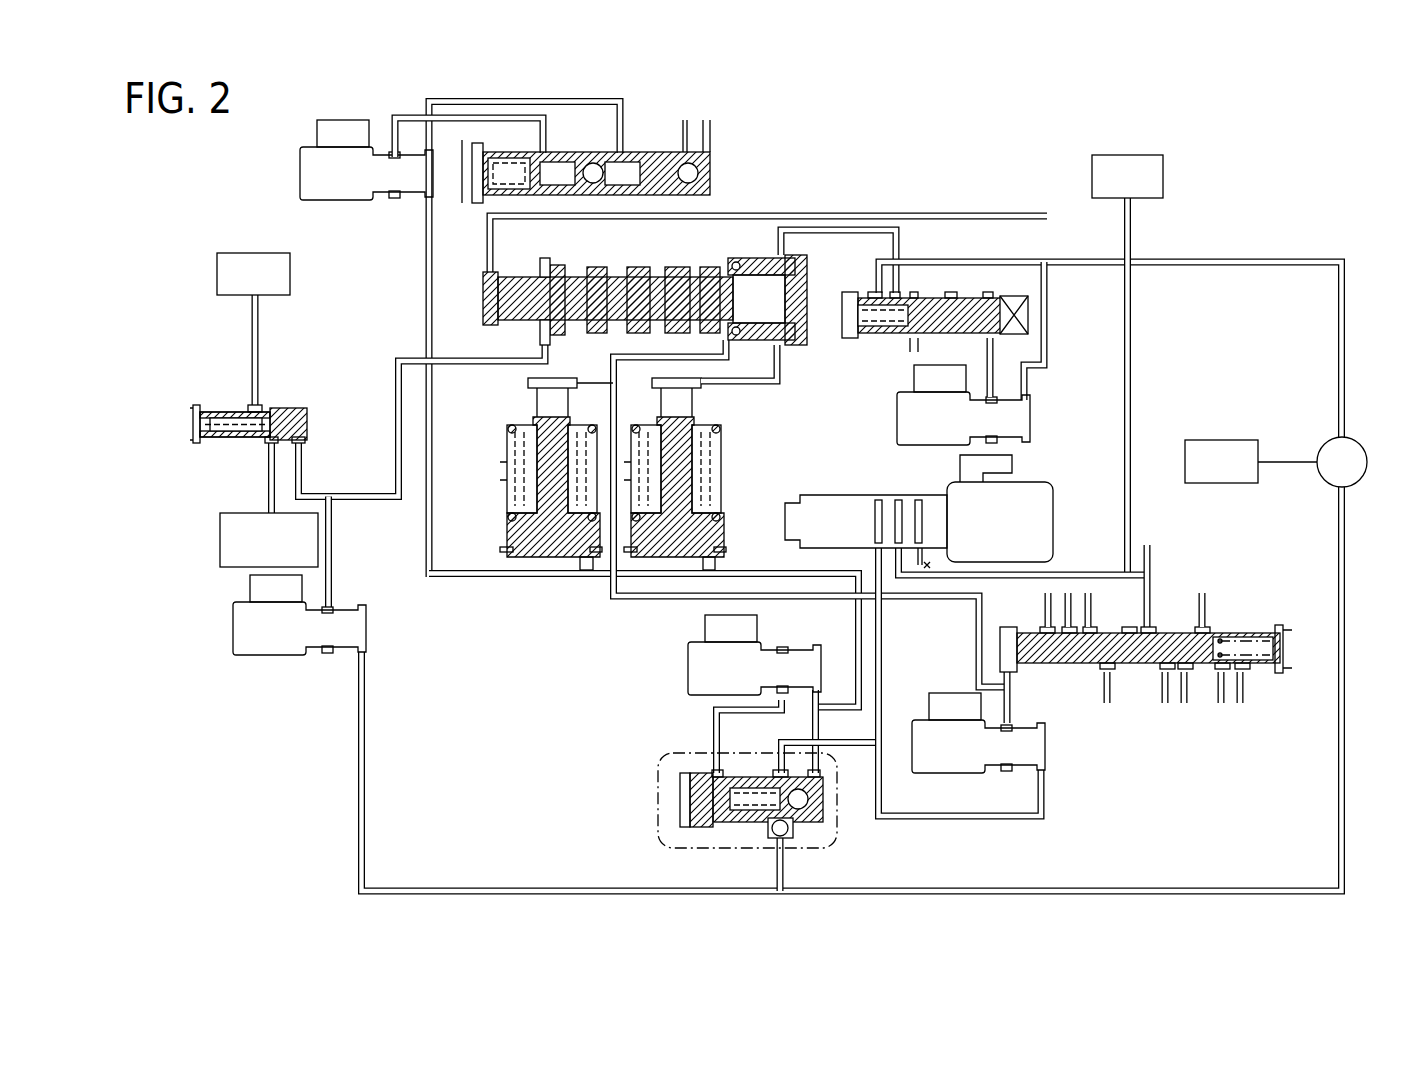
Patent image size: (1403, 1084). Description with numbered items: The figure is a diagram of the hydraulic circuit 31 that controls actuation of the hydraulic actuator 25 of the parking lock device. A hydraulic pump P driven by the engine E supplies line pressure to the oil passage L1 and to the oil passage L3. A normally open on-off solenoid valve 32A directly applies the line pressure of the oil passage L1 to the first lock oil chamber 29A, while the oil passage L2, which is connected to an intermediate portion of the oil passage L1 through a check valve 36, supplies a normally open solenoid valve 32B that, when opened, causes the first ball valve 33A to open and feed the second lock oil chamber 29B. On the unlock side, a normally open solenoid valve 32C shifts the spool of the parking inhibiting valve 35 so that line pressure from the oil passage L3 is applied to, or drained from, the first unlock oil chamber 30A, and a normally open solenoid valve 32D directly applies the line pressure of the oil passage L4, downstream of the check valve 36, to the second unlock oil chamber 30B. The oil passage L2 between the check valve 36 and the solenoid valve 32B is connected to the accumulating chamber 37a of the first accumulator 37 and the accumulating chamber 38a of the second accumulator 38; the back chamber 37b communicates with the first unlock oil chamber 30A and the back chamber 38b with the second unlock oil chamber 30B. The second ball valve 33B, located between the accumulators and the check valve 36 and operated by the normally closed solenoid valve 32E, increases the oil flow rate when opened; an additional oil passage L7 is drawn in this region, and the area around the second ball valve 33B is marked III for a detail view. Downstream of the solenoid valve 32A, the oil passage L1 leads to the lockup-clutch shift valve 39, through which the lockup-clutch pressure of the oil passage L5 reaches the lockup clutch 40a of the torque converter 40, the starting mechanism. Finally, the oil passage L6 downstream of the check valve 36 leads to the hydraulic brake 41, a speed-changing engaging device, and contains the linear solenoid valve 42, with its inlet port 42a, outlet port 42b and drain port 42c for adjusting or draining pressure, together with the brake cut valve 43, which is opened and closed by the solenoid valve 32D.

The hydraulic actuator 25 is at (623, 283).
The first lock oil chamber 29A is at (540, 340).
The second lock oil chamber 29B is at (484, 270).
The first unlock oil chamber 30A is at (758, 290).
The second unlock oil chamber 30B is at (703, 266).
The hydraulic circuit 31 is at (1006, 177).
The solenoid valve 32A is at (233, 633).
The solenoid valve 32B is at (300, 176).
The solenoid valve 32C is at (897, 410).
The solenoid valve 32D is at (957, 766).
The solenoid valve 32E is at (688, 669).
The first ball valve 33A is at (652, 136).
The second ball valve 33B is at (717, 797).
The parking inhibiting valve 35 is at (891, 346).
The check valve 36 is at (789, 834).
The first accumulator 37 is at (708, 457).
The accumulating chamber 37a is at (715, 550).
The back chamber 37b is at (690, 388).
The second accumulator 38 is at (529, 474).
The accumulating chamber 38a is at (505, 550).
The back chamber 38b is at (540, 388).
The lockup-clutch shift valve 39 is at (279, 404).
The torque converter 40 is at (242, 234).
The lockup clutch 40a is at (283, 238).
The hydraulic brake 41 is at (1145, 155).
The linear solenoid valve 42 is at (919, 494).
The inlet port 42a is at (876, 520).
The outlet port 42b is at (898, 500).
The drain port 42c is at (919, 502).
The brake cut valve 43 is at (1173, 624).
The oil passage L1 is at (395, 400).
The oil passage L2 is at (523, 100).
The oil passage L3 is at (833, 233).
The oil passage L4 is at (617, 400).
The oil passage L5 is at (252, 358).
The oil passage L6 is at (1131, 378).
The seventh oil passage L7 is at (713, 720).
The engine E is at (1232, 440).
The hydraulic pump P is at (1312, 462).
The section III is at (650, 779).